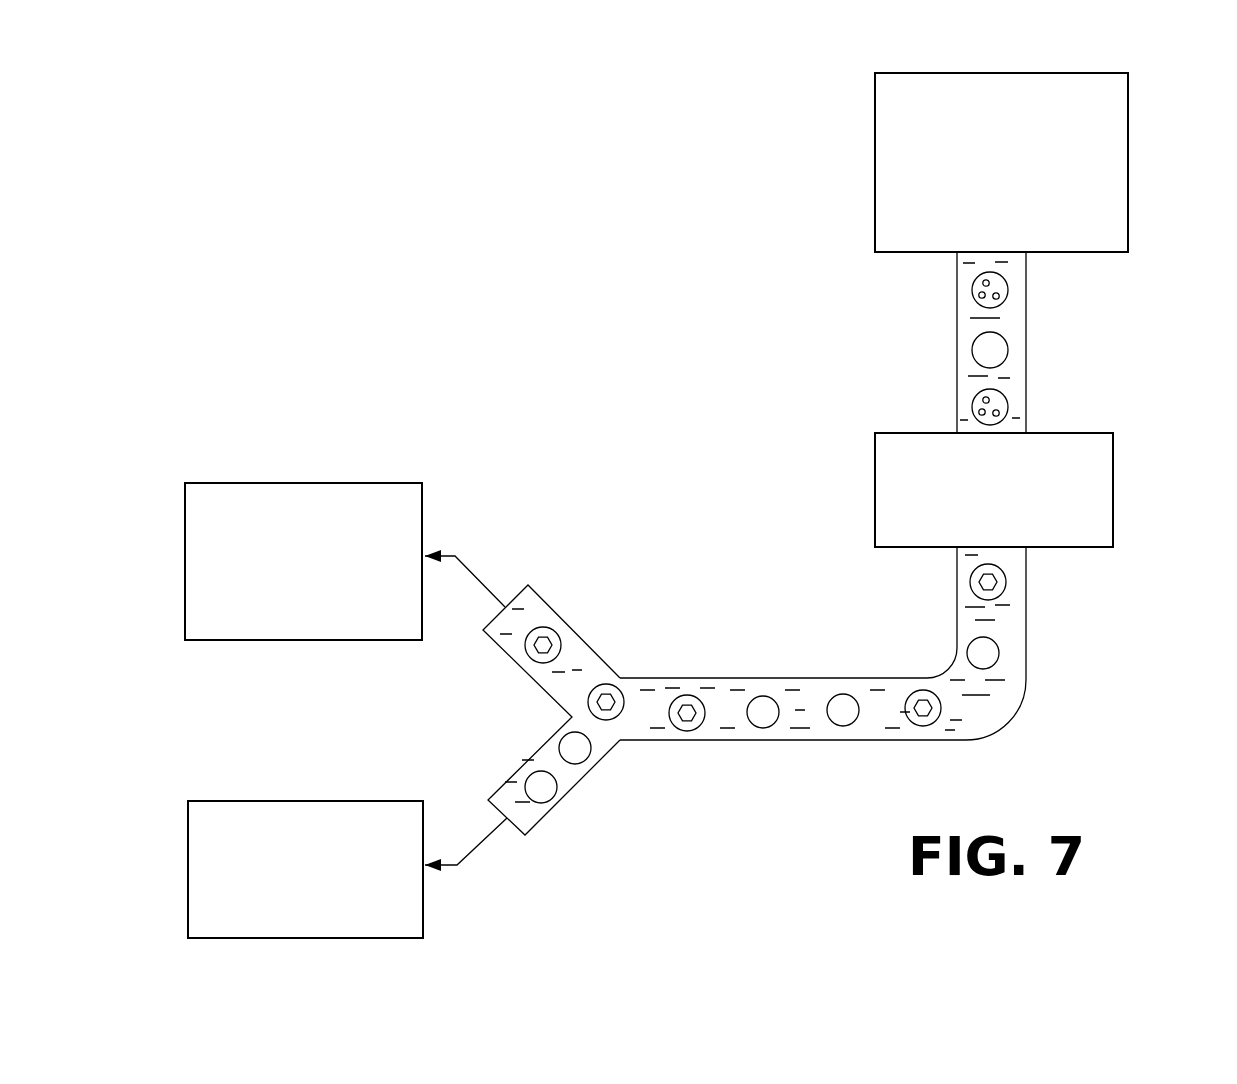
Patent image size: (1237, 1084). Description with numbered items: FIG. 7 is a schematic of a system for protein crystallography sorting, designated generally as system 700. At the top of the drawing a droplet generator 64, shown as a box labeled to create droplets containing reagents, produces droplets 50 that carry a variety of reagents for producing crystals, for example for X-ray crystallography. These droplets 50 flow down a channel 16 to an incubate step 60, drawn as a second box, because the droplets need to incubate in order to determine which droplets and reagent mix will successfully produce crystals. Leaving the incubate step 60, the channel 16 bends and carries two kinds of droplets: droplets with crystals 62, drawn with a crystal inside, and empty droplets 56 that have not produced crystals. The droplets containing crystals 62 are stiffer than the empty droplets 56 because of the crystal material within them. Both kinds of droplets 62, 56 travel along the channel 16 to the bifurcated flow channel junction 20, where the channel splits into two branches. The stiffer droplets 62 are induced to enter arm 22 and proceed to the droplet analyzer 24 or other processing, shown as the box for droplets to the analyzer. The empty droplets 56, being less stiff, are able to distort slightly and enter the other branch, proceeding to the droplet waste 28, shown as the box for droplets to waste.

The system for protein crystallography sorting 700 is at (585, 280).
The droplet generator 64 is at (1128, 182).
The channel 16 is at (1026, 353).
The droplets containing reagents 50 is at (973, 393).
The incubate step 60 is at (1113, 467).
The droplets with crystals 62 is at (1007, 582).
The bifurcated flow channel junction 20 is at (618, 676).
The empty droplets 56 is at (833, 699).
The arm 22 is at (552, 602).
The droplet analyzer 24 is at (307, 483).
The droplet waste 28 is at (265, 801).